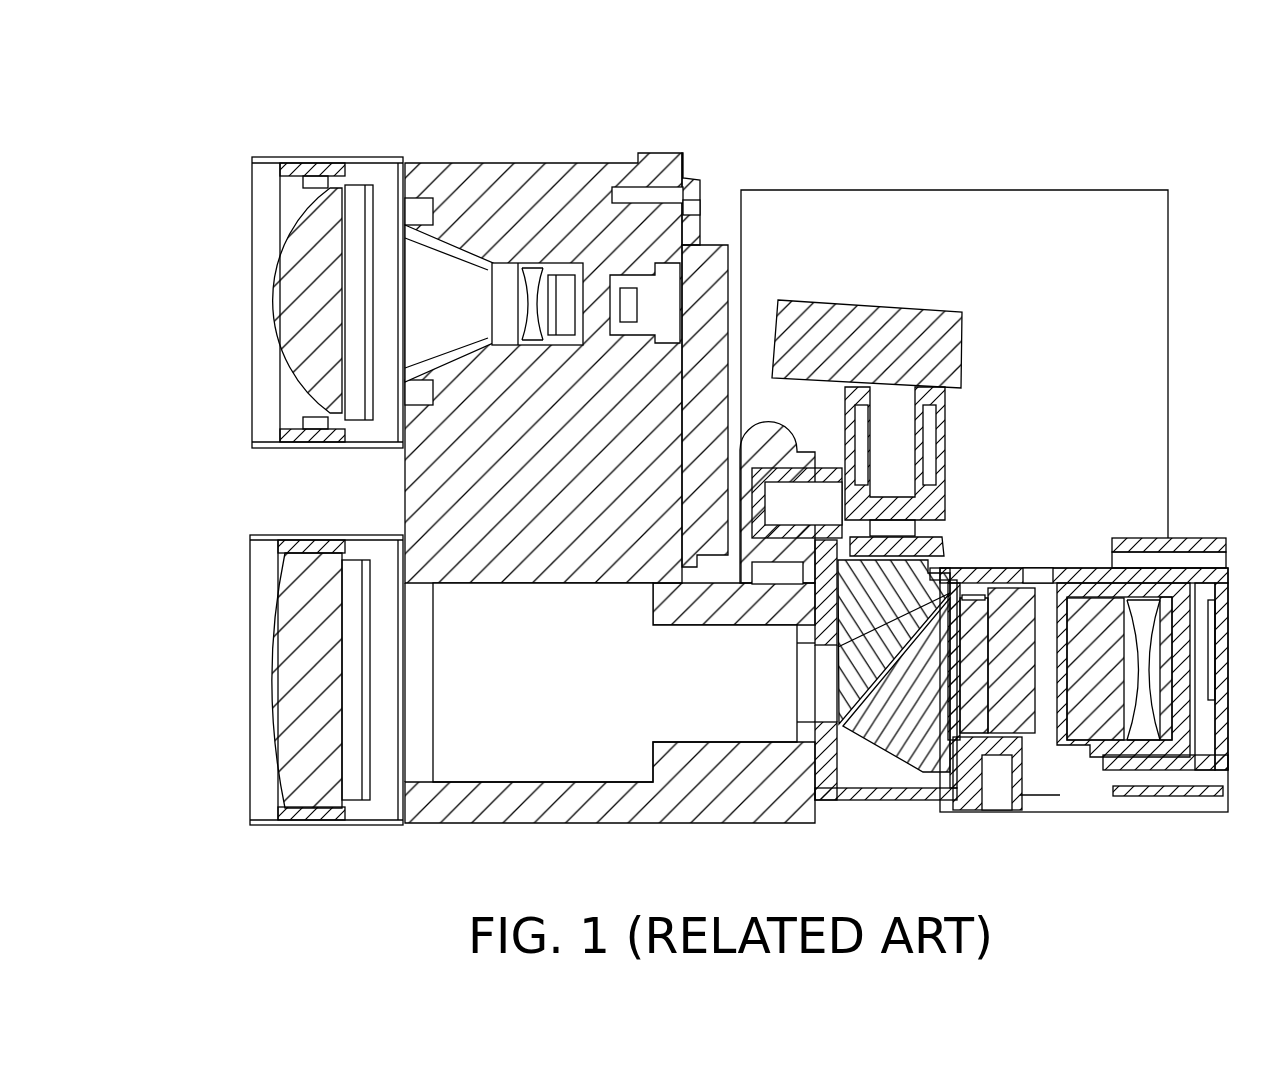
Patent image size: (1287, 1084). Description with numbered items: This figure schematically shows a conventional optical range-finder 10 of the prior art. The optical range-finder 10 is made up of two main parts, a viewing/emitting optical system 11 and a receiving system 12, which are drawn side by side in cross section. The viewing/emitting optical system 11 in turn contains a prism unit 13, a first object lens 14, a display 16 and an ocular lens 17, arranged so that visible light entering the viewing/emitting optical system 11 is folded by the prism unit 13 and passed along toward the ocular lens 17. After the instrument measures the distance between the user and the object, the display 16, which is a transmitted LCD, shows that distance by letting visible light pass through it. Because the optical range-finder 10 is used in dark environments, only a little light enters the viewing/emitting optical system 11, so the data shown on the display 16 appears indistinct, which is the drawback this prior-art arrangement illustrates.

The optical range-finder 10 is at (228, 99).
The viewing/emitting optical system 11 is at (620, 830).
The receiving system 12 is at (463, 146).
The prism unit 13 is at (881, 762).
The first object lens 14 is at (316, 800).
The display 16 is at (1005, 727).
The ocular lens 17 is at (1185, 730).